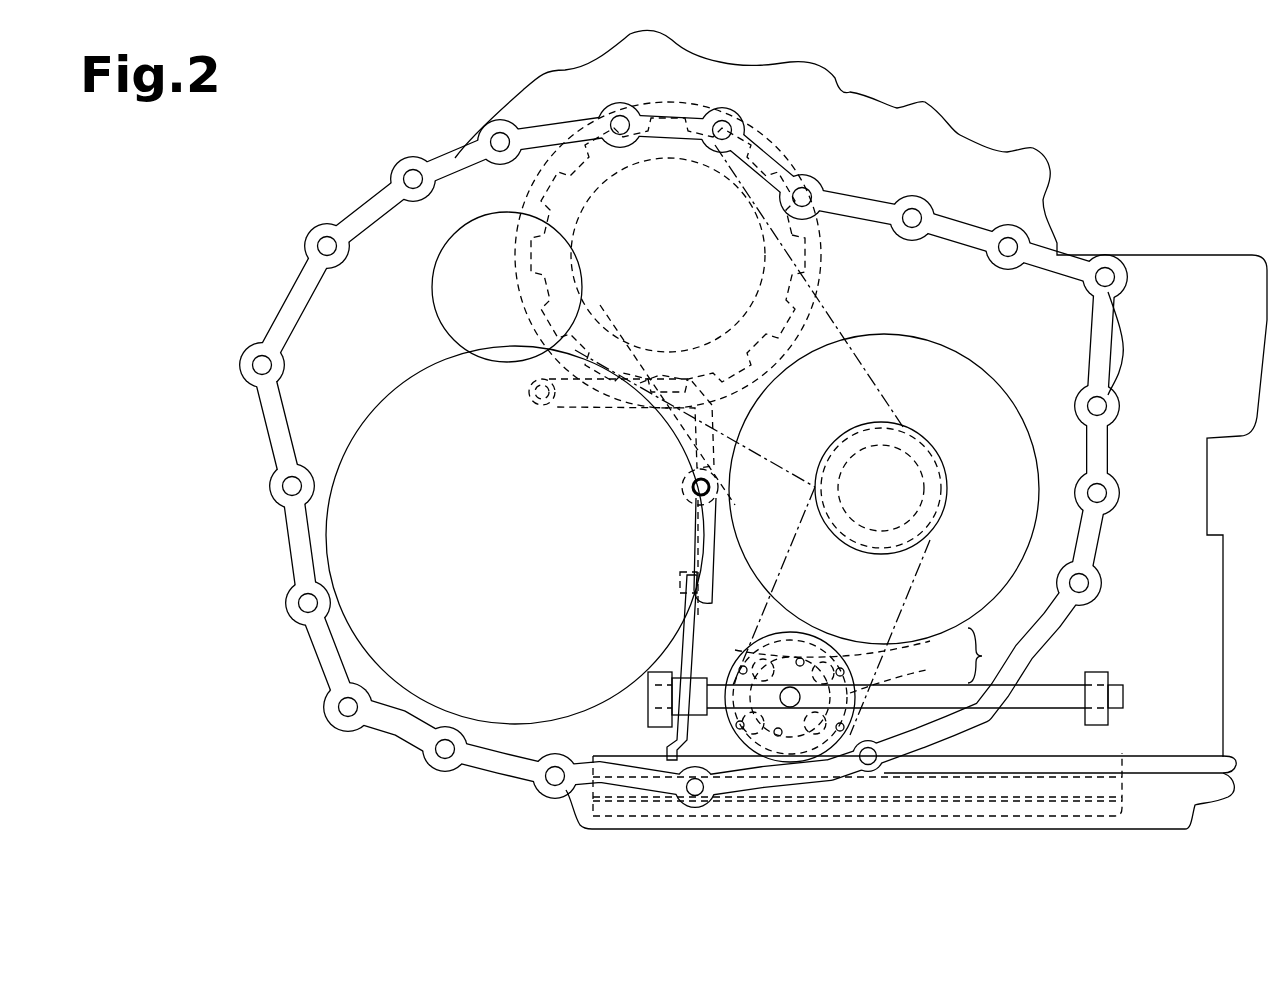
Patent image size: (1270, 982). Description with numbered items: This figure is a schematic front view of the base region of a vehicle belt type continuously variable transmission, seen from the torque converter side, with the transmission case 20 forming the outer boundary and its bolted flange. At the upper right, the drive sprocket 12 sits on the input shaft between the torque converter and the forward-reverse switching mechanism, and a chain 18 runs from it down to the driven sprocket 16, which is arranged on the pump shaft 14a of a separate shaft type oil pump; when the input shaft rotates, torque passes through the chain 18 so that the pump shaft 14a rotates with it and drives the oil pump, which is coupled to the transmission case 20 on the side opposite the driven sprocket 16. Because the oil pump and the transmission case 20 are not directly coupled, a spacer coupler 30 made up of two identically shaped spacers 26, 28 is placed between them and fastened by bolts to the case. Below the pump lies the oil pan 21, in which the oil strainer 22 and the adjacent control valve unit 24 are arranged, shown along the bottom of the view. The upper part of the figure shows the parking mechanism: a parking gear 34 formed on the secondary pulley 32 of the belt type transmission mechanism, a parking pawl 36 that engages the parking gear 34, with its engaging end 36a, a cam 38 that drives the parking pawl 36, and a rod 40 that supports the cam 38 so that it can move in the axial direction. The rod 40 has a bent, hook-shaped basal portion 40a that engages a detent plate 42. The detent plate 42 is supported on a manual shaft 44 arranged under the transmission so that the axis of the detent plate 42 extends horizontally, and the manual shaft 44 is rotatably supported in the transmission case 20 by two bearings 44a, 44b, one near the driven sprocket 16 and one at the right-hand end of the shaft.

The drive sprocket 12 is at (945, 452).
The pump shaft 14a is at (790, 697).
The driven sprocket 16 is at (838, 648).
The chain 18 is at (935, 580).
The transmission case 20 is at (312, 660).
The oil pan 21 is at (1195, 805).
The oil strainer 22 is at (1122, 811).
The control valve unit 24 is at (1125, 760).
The spacer 26 is at (928, 643).
The spacer 28 is at (928, 671).
The spacer coupler 30 is at (994, 655).
The secondary pulley 32 is at (752, 156).
The parking gear 34 is at (806, 252).
The parking pawl 36 is at (548, 412).
The tensioner arm end 36a is at (640, 412).
The cam 38 is at (683, 493).
The rod 40 is at (709, 487).
The basal portion 40a is at (708, 556).
The detent plate 42 is at (698, 630).
The manual shaft 44 is at (1050, 684).
The bearing 44a is at (648, 714).
The bearing 44b is at (1108, 676).